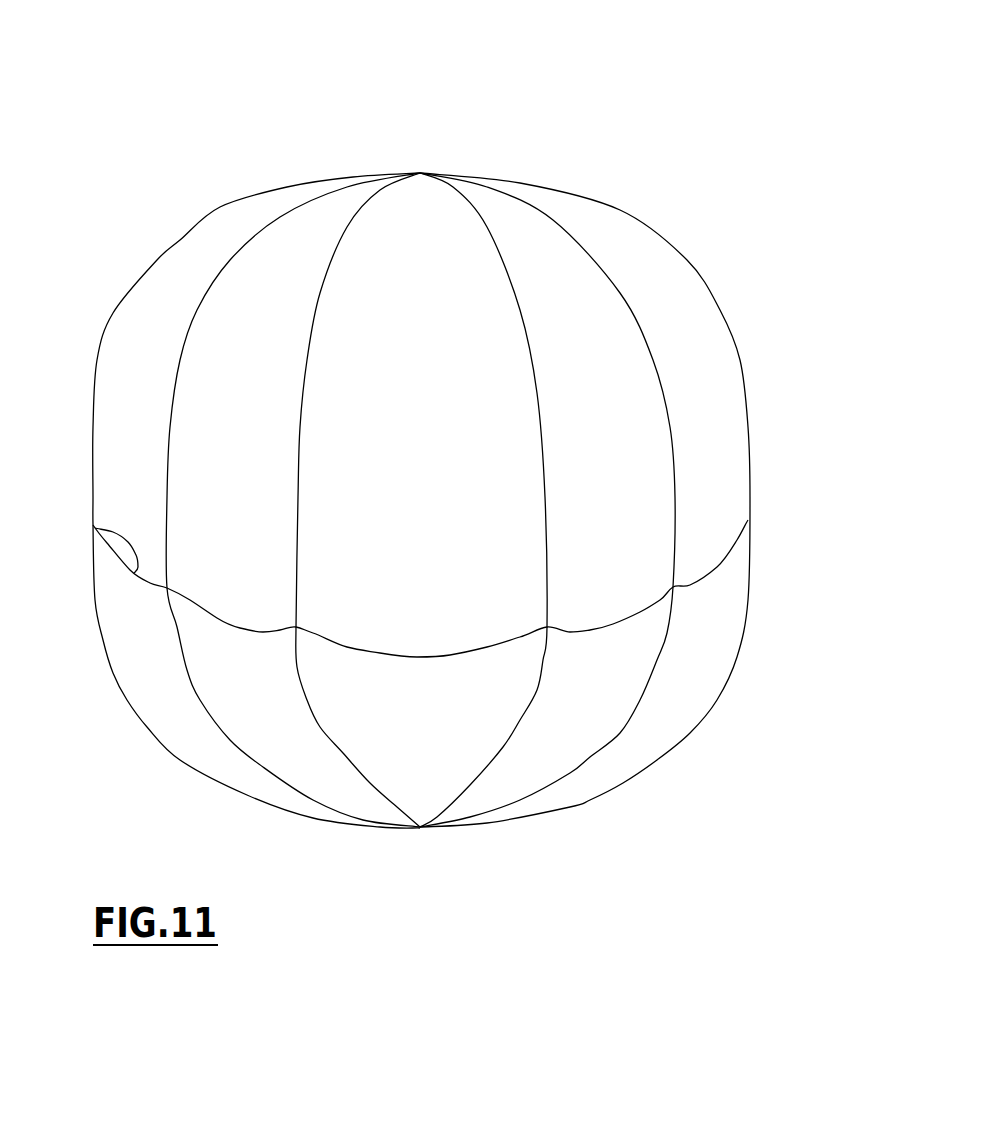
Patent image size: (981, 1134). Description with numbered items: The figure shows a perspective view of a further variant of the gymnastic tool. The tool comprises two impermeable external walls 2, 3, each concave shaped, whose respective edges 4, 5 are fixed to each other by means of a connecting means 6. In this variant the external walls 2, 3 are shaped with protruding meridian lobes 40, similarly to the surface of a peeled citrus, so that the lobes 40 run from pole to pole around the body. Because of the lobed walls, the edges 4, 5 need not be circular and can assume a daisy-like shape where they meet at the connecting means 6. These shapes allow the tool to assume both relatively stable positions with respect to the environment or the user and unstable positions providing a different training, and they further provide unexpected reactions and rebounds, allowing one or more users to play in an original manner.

The external wall 2 is at (428, 715).
The external wall 3 is at (390, 477).
The edge 4 is at (222, 623).
The edge 5 is at (95, 528).
The connecting means 6 is at (613, 625).
The protruding meridian lobes 40 is at (518, 220).